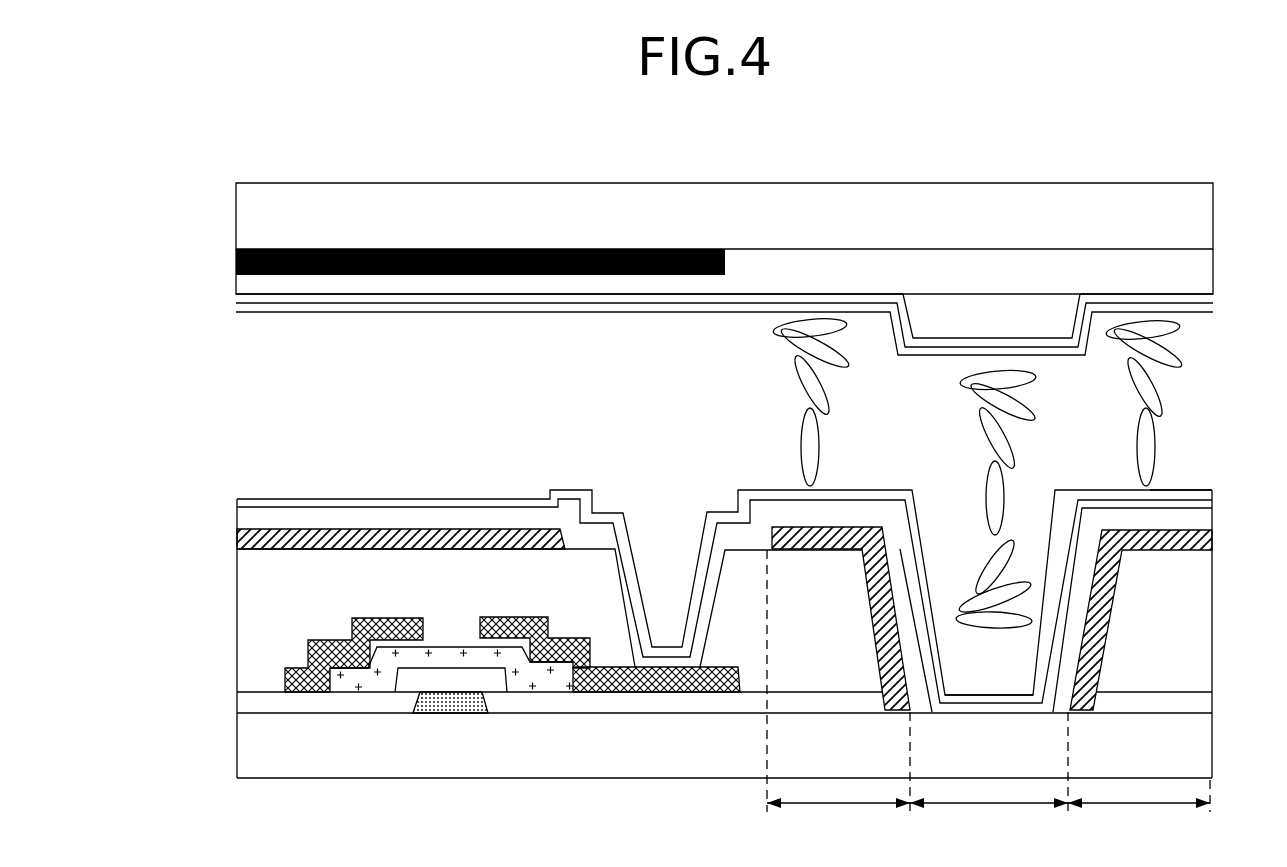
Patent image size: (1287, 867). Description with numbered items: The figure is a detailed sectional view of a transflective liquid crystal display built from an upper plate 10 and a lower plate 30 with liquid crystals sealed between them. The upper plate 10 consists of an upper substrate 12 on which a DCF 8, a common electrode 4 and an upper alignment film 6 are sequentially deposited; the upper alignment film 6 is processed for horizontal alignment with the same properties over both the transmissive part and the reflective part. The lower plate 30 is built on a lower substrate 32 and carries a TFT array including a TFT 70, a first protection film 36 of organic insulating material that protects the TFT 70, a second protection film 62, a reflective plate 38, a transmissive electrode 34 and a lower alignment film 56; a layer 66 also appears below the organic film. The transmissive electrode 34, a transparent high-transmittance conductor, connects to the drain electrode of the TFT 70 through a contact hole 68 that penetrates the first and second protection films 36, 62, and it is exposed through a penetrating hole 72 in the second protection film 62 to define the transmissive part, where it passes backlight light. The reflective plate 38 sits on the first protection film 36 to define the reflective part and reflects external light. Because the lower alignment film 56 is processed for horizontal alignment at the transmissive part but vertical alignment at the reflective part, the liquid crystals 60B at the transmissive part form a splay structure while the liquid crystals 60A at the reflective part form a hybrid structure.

The upper plate 10 is at (226, 183).
The upper substrate 12 is at (1213, 214).
The DCF 8 is at (1213, 270).
The common electrode 4 is at (1213, 298).
The upper alignment film 6 is at (1207, 314).
The liquid crystals 60A is at (818, 392).
The liquid crystals 60B is at (1003, 440).
The lower plate 30 is at (227, 500).
The lower substrate 32 is at (1212, 745).
The gate insulating layer 66 is at (1212, 703).
The first protection film 36 is at (1212, 627).
The reflective plate 38 is at (1212, 541).
The second protection film 62 is at (1212, 519).
The transmissive electrode 34 is at (1212, 500).
The lower alignment film 56 is at (1198, 490).
The contact hole 68 is at (667, 643).
The TFT 70 is at (456, 601).
The penetrating hole 72 is at (1012, 652).